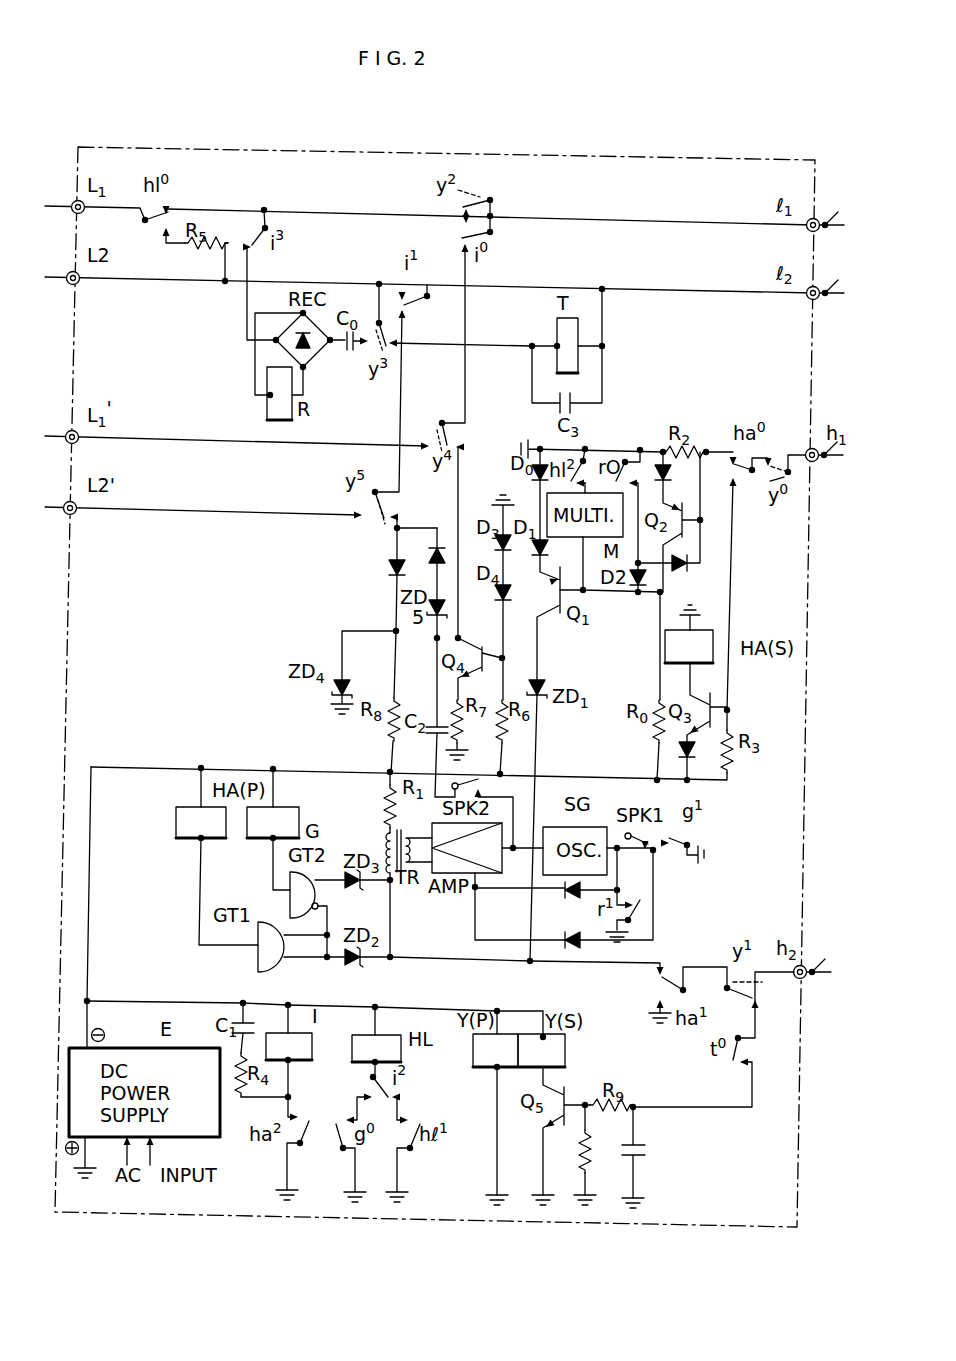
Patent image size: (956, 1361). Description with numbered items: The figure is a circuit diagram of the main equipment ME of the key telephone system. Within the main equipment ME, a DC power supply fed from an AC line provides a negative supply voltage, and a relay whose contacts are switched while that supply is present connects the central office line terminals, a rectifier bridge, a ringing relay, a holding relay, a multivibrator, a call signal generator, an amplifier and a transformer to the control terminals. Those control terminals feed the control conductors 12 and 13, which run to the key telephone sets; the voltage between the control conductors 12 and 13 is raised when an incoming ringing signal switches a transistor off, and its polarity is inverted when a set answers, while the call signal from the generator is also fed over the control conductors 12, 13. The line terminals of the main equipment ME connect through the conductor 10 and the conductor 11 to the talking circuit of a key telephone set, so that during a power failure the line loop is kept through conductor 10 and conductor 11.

The conductor 10 is at (837, 234).
The conductor 11 is at (837, 302).
The control conductor 12 is at (833, 468).
The control conductor 13 is at (820, 981).
The main equipment ME is at (377, 152).